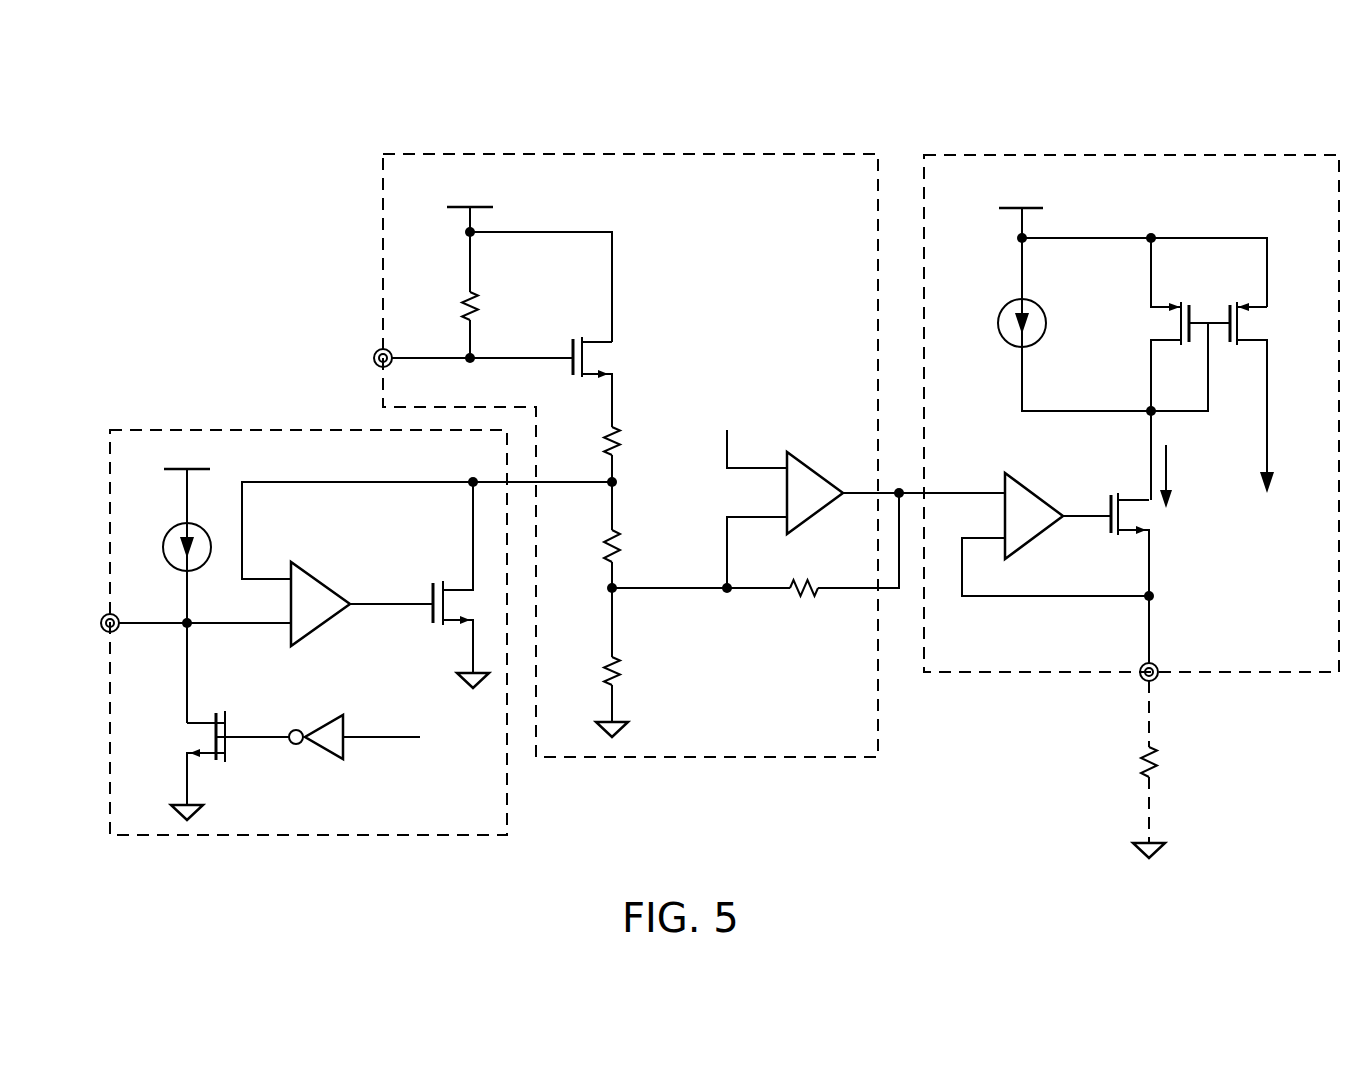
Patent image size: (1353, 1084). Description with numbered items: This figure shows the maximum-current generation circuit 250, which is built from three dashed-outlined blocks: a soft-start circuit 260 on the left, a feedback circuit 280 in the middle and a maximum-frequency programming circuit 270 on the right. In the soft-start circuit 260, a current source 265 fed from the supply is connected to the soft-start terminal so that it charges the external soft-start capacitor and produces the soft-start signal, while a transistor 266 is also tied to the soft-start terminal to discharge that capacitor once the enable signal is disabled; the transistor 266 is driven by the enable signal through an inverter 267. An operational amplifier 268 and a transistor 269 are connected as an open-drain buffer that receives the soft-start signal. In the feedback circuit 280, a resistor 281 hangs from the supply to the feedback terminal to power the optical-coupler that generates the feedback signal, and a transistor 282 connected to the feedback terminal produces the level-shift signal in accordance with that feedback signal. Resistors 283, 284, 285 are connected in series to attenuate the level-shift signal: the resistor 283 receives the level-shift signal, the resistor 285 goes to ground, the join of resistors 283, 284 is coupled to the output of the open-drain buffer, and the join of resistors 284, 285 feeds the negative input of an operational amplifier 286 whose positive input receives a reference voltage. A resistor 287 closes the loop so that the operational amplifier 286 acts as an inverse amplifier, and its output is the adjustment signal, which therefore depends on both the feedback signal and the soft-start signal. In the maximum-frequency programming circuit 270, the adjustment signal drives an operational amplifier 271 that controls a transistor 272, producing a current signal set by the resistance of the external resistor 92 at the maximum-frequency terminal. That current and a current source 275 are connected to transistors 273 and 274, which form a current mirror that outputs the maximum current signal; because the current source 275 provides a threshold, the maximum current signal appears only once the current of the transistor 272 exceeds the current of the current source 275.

The maximum-current generation circuit 250 is at (1340, 114).
The soft-start circuit 260 is at (507, 805).
The current source 265 is at (170, 527).
The transistor 266 is at (218, 712).
The inverter 267 is at (320, 760).
The operational amplifier 268 is at (325, 628).
The transistor 269 is at (428, 590).
The maximum-frequency programming circuit 270 is at (1297, 672).
The operational amplifier 271 is at (1003, 476).
The transistor 272 is at (1108, 500).
The transistor 273 is at (1158, 310).
The transistor 274 is at (1260, 305).
The current source 275 is at (1004, 304).
The feedback circuit 280 is at (878, 727).
The resistor 281 is at (455, 312).
The transistor 282 is at (565, 350).
The resistor 283 is at (623, 432).
The resistor 284 is at (627, 550).
The resistor 285 is at (627, 678).
The operational amplifier 286 is at (812, 462).
The resistor 287 is at (800, 600).
The resistor 92 is at (1165, 763).